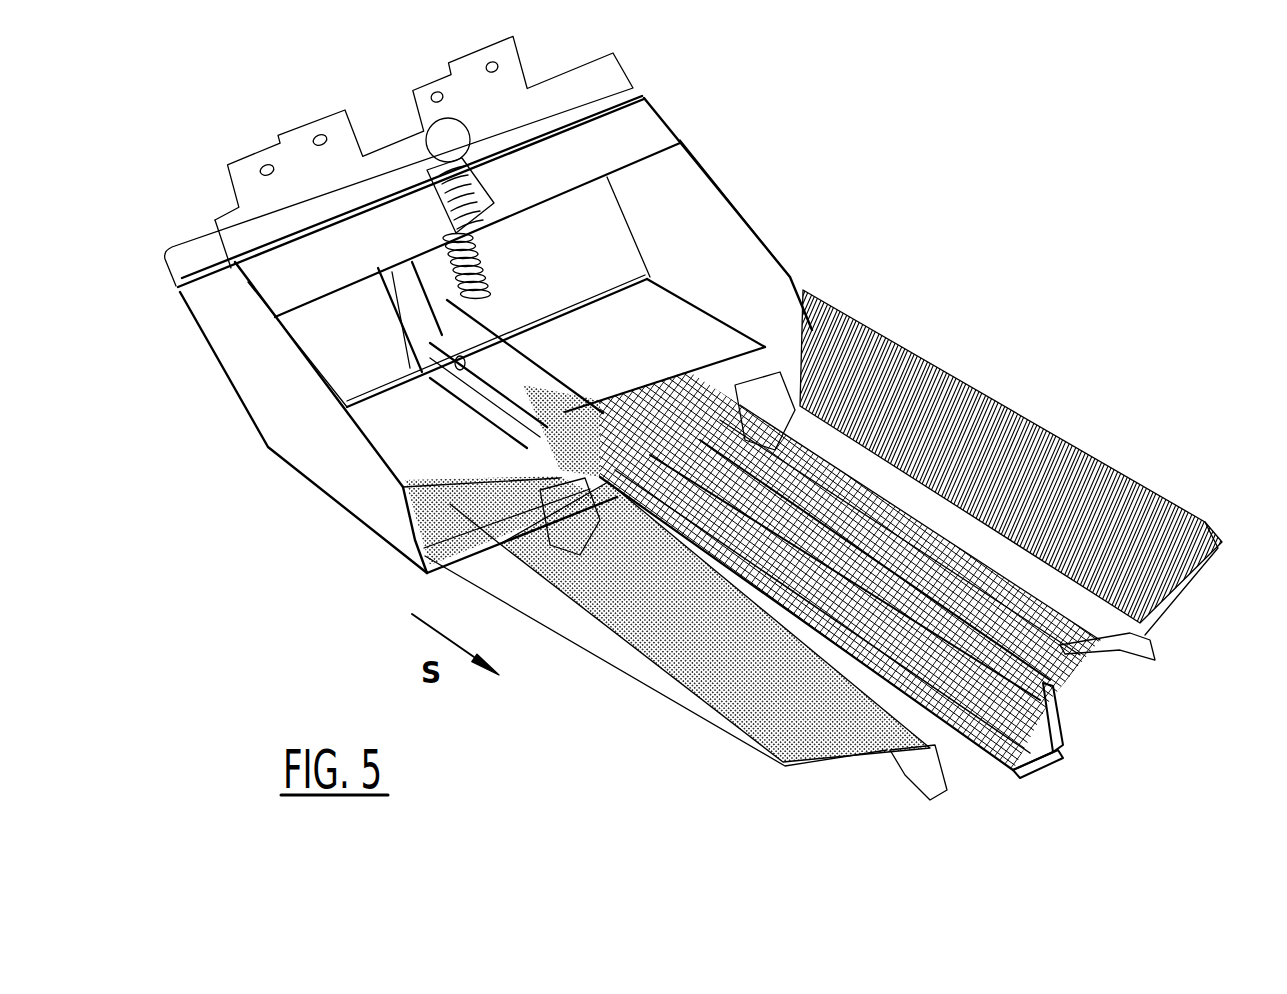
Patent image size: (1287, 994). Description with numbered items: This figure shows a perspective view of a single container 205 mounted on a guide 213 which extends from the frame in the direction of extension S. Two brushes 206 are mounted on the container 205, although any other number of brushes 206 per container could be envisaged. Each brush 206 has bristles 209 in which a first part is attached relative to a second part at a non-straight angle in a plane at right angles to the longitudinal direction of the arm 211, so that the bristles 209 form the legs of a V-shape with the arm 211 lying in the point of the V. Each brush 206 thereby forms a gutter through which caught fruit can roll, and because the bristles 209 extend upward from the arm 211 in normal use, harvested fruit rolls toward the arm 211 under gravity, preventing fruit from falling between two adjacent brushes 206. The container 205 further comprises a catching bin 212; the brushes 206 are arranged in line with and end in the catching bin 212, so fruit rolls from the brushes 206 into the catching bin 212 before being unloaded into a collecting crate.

The container 205 is at (199, 427).
The brush 206 is at (1044, 368).
The bristles 209 is at (1213, 543).
The arm 211 is at (1142, 634).
The catching bin 212 is at (670, 322).
The guide 213 is at (1080, 746).